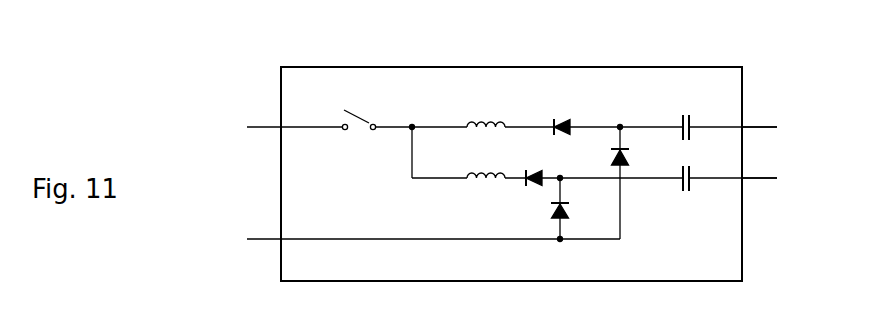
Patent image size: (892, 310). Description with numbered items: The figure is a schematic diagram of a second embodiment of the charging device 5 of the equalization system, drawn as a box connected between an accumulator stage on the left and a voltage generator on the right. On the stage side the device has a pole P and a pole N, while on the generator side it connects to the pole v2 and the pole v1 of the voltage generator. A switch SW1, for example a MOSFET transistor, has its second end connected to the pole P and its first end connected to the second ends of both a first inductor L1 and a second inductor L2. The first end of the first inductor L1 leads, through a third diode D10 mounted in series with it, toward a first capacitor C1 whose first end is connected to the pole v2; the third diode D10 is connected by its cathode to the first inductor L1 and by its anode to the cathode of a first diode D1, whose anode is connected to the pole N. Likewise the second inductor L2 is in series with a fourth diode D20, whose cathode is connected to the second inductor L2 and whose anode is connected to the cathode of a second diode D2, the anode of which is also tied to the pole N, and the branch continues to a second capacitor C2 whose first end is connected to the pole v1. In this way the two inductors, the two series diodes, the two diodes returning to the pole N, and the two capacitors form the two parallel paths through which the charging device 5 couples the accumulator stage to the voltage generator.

The charging device 5 is at (444, 67).
The switch SW1 is at (353, 109).
The first inductor L1 is at (486, 108).
The second inductor L2 is at (486, 162).
The third diode D10 is at (562, 112).
The fourth diode D20 is at (532, 166).
The first diode D1 is at (601, 156).
The second diode D2 is at (540, 210).
The first capacitor C1 is at (683, 115).
The second capacitor C2 is at (683, 197).
The pole of the accumulator stage P is at (283, 128).
The pole of the stage N is at (422, 188).
The pole of the voltage generator v1 is at (761, 196).
The pole of the voltage generator v2 is at (760, 115).